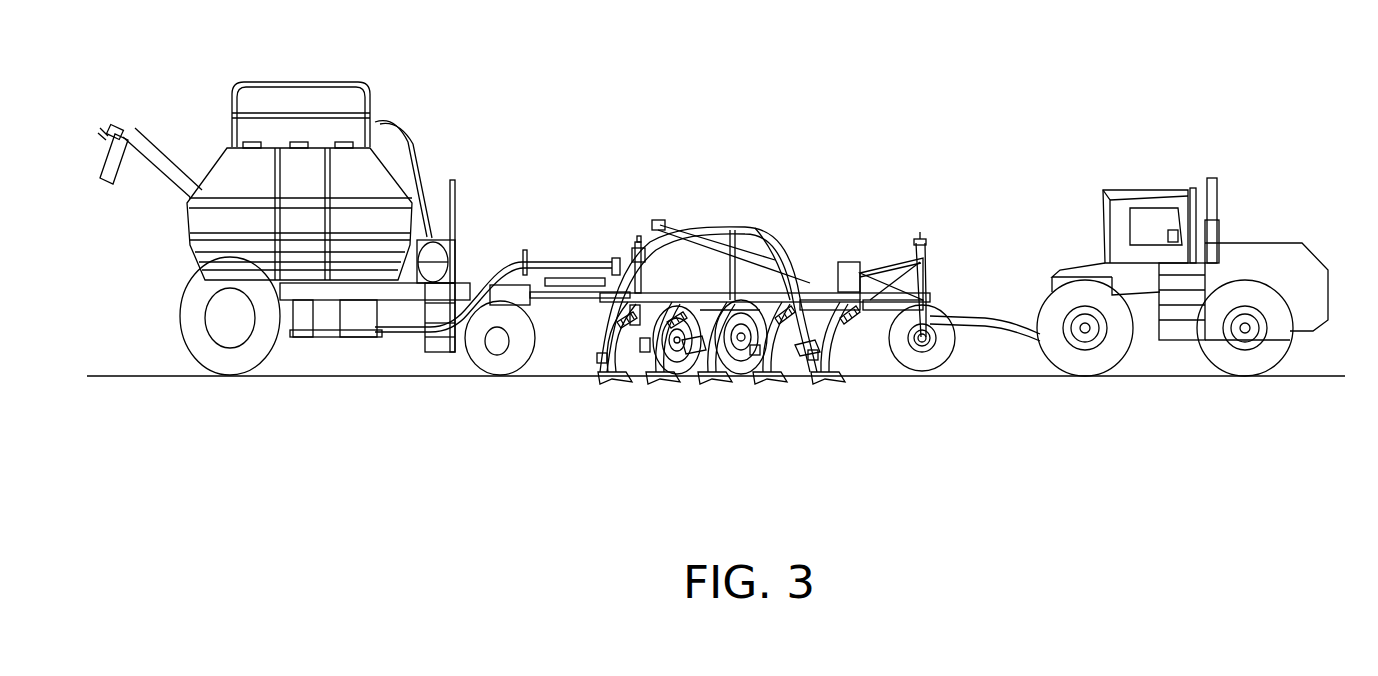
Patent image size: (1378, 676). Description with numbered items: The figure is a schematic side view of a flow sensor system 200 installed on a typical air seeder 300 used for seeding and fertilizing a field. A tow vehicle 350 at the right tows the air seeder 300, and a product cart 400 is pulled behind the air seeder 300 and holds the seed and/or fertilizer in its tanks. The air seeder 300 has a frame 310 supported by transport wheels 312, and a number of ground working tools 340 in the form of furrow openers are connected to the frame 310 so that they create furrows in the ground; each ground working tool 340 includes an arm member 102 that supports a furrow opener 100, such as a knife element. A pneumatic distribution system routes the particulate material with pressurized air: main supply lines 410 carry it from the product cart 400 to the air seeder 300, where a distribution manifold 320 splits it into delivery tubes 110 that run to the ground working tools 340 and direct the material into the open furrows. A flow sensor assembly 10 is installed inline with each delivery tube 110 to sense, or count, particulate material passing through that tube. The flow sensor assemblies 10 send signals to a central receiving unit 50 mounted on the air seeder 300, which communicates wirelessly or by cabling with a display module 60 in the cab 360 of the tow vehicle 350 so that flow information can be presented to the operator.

The product cart 400 is at (205, 88).
The main supply lines 410 is at (492, 268).
The flow sensor system 200 is at (690, 205).
The distribution manifold 320 is at (735, 228).
The air seeder 300 is at (830, 286).
The delivery tubes 110 is at (790, 245).
The flow sensor assembly 10 is at (835, 270).
The arm member 102 is at (840, 330).
The furrow opener 100 is at (818, 360).
The ground working tools 340 is at (795, 372).
The central receiving unit 50 is at (880, 275).
The transport wheels 312 is at (925, 372).
The frame 310 is at (885, 340).
The tow vehicle 350 is at (1268, 245).
The cab 360 is at (1145, 195).
The display module 60 is at (1168, 238).